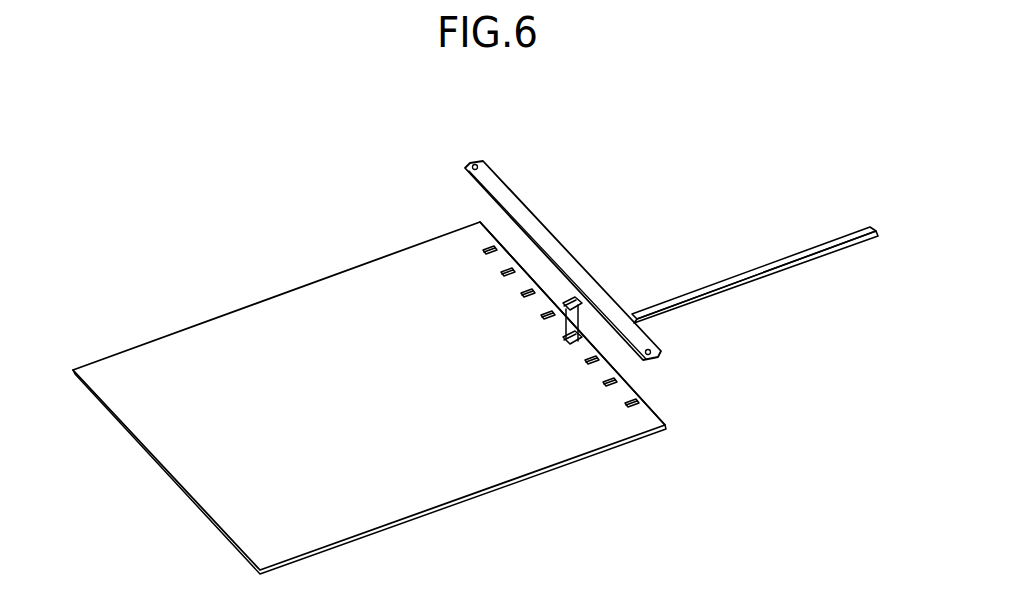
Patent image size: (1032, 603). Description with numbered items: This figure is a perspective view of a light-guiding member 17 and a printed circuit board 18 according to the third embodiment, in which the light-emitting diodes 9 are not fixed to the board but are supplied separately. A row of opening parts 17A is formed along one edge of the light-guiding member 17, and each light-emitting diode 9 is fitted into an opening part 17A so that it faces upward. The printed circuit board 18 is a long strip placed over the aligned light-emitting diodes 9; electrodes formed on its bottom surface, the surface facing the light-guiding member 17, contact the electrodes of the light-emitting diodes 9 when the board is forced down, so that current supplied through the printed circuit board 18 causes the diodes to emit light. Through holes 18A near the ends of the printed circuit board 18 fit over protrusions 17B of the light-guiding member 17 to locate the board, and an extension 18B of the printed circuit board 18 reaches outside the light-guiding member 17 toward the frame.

The light-guiding member 17 is at (188, 353).
The opening part 17A is at (490, 254).
The protrusion 17B is at (650, 418).
The light-emitting diode 9 is at (566, 343).
The printed circuit board 18 is at (528, 228).
The through hole 18A is at (652, 352).
The arm 18B is at (740, 282).